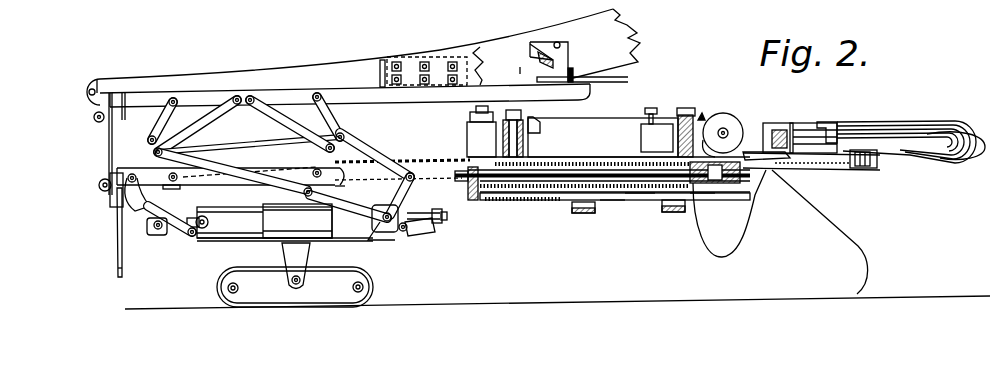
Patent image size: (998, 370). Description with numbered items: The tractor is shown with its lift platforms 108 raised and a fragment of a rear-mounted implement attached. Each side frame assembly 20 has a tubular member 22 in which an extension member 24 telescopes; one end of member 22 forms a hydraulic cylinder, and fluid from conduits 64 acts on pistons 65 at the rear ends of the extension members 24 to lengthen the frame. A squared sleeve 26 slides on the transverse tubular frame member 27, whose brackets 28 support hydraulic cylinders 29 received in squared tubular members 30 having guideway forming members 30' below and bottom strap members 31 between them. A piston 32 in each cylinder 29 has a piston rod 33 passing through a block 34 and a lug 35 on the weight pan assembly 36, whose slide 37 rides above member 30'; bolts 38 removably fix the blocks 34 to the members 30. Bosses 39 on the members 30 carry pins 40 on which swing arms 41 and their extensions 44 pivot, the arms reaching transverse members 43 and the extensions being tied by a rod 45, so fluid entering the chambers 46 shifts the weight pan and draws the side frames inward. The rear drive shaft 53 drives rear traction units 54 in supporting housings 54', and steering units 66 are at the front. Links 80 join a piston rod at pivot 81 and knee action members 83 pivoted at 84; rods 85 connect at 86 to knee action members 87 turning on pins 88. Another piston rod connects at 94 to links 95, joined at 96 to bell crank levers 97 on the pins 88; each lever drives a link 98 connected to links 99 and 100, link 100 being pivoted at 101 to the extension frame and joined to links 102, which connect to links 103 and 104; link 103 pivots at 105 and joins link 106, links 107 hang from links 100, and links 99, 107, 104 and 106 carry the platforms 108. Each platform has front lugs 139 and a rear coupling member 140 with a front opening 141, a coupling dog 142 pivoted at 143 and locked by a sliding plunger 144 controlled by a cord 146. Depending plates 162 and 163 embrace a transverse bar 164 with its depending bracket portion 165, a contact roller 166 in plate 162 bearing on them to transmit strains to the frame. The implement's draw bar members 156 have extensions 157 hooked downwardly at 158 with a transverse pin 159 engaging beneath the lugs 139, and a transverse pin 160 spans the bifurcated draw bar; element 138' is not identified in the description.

The side frame assembly 20 is at (421, 152).
The tubular member 22 is at (832, 171).
The extension member 24 is at (262, 166).
The squared sleeve 26 is at (812, 124).
The transverse tubular frame member 27 is at (778, 125).
The bracket 28 is at (770, 170).
The hydraulic cylinder 29 is at (581, 162).
The tubular member 30 is at (609, 160).
The guideway forming member 30' is at (522, 227).
The bottom strap member 31 is at (572, 210).
The piston 32 is at (703, 195).
The piston rod 33 is at (640, 194).
The block 34 is at (470, 190).
The lug 35 is at (473, 202).
The weight pan assembly 36 is at (520, 201).
The slide 37 is at (613, 200).
The bolt 38 is at (462, 171).
The boss 39 is at (524, 153).
The pin 40 is at (524, 141).
The arm 41 is at (570, 139).
The transverse member 43 is at (478, 111).
The extension 44 is at (536, 118).
The rod 45 is at (605, 118).
The chamber 46 is at (720, 185).
The rear drive shaft 53 is at (743, 128).
The rear traction unit 54 is at (823, 232).
The supporting housing 54' is at (739, 213).
The conduit 64 is at (920, 131).
The piston 65 is at (870, 168).
The ground engaging steering unit 66 is at (376, 290).
The link 80 is at (178, 243).
The pivot 81 is at (156, 231).
The knee action member 83 is at (136, 214).
The pivot 84 is at (207, 218).
The rod 85 is at (245, 240).
The pivot 86 is at (380, 232).
The knee action member 87 is at (333, 222).
The pin 88 is at (385, 205).
The pivot 94 is at (437, 232).
The link 95 is at (420, 237).
The pivot 96 is at (403, 232).
The bell crank lever 97 is at (408, 193).
The link 98 is at (367, 160).
The link 99 is at (340, 120).
The link 100 is at (322, 152).
The pivot 101 is at (282, 162).
The link 102 is at (212, 163).
The link 103 is at (157, 152).
The link 104 is at (175, 128).
The pivot 105 is at (186, 187).
The link 106 is at (158, 120).
The link 107 is at (292, 117).
The lifting platform 108 is at (203, 93).
The bracket 138' is at (354, 187).
The projecting lug 139 is at (97, 80).
The coupling member 140 is at (547, 43).
The front opening 141 is at (528, 68).
The coupling dog 142 is at (530, 48).
The pivot 143 is at (587, 35).
The sliding plunger 144 is at (575, 79).
The wire or cord 146 is at (608, 82).
The draw bar member 156 is at (517, 43).
The extension 157 is at (342, 72).
The hook 158 is at (82, 100).
The transverse pin 159 is at (96, 120).
The transverse pin 160 is at (530, 62).
The front plate 162 is at (108, 142).
The plate 163 is at (135, 90).
The transverse bar 164 is at (116, 203).
The depending bracket portion 165 is at (117, 268).
The transverse contact roller 166 is at (100, 187).